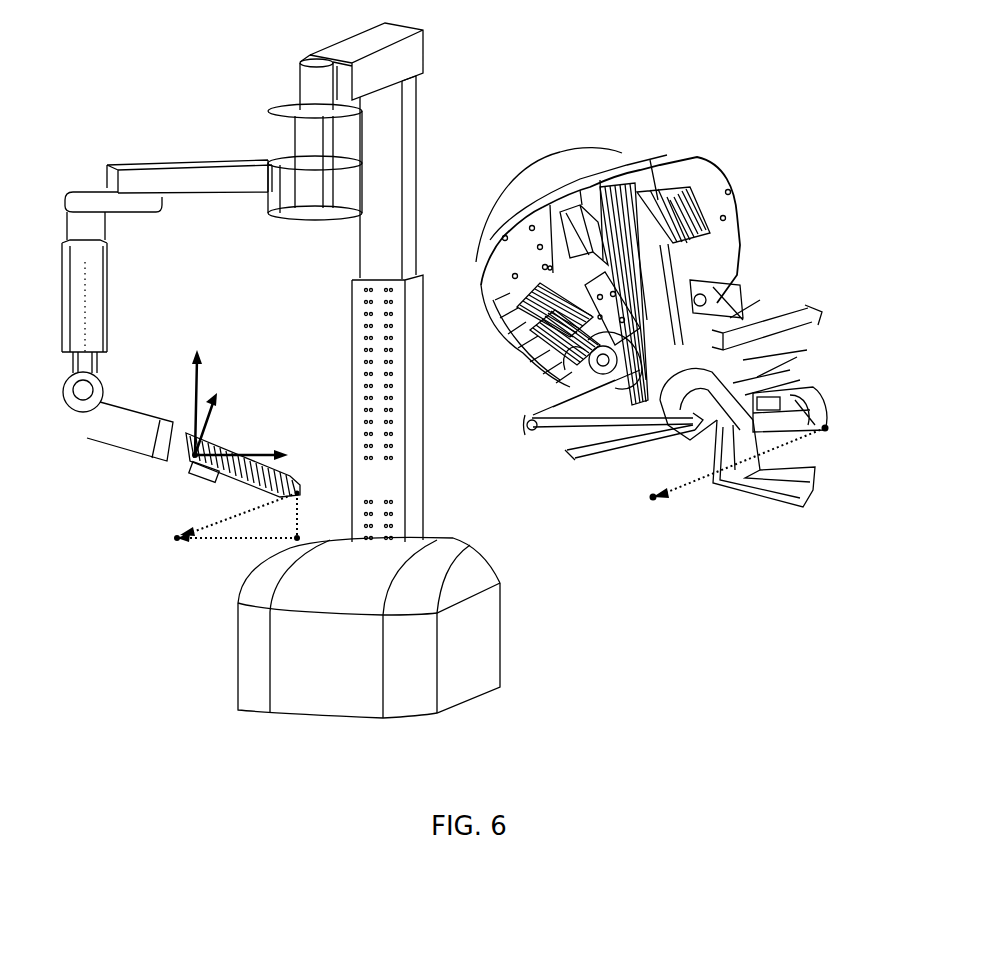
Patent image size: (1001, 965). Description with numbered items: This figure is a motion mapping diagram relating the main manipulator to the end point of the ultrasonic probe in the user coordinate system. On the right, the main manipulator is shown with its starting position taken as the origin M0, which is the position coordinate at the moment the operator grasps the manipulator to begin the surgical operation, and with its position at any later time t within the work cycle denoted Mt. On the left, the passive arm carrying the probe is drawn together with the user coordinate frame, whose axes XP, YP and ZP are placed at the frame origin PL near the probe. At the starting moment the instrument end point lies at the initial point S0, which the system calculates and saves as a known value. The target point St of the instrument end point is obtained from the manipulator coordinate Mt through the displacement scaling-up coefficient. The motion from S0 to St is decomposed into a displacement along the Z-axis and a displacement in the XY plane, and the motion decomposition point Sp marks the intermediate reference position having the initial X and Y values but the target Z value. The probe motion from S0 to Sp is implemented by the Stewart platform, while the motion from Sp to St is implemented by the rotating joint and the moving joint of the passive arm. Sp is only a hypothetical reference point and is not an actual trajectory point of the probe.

The initial point S0 is at (383, 488).
The target point St is at (161, 526).
The motion decomposition point Sp is at (374, 535).
The origin M0 is at (888, 433).
The main manipulator position coordinate Mt is at (699, 486).
The tool coordinate frame origin PL is at (224, 417).
The X axis XP is at (302, 453).
The Y axis YP is at (218, 384).
The Z axis ZP is at (182, 348).